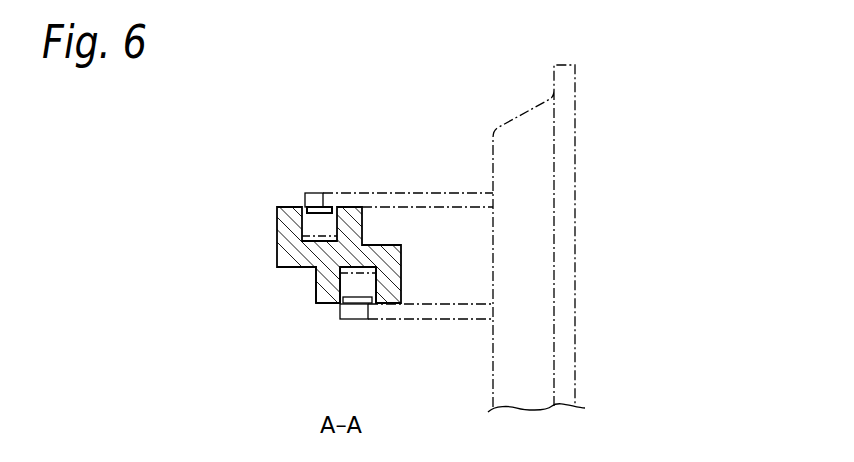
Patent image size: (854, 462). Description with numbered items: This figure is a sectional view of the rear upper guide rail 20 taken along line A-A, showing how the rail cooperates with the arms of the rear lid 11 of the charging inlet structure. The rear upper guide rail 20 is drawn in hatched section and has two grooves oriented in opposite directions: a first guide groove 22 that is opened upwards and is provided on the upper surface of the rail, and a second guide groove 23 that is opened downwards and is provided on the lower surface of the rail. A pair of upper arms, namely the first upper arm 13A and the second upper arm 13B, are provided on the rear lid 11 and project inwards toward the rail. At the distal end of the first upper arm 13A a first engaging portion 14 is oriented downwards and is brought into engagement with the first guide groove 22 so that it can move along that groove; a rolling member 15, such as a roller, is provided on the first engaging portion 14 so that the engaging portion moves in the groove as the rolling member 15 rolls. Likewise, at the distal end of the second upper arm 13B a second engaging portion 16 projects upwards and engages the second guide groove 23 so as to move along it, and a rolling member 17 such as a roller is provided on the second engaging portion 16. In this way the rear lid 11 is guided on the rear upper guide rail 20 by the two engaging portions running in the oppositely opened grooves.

The rear lid 11 is at (537, 260).
The first upper arm 13A is at (453, 196).
The second upper arm 13B is at (435, 317).
The first engaging portion 14 is at (323, 191).
The rolling member 15 is at (305, 276).
The second engaging portion 16 is at (363, 305).
The rolling member 17 is at (358, 289).
The rear upper guide rail 20 is at (289, 259).
The first guide groove 22 is at (306, 206).
The second guide groove 23 is at (342, 301).